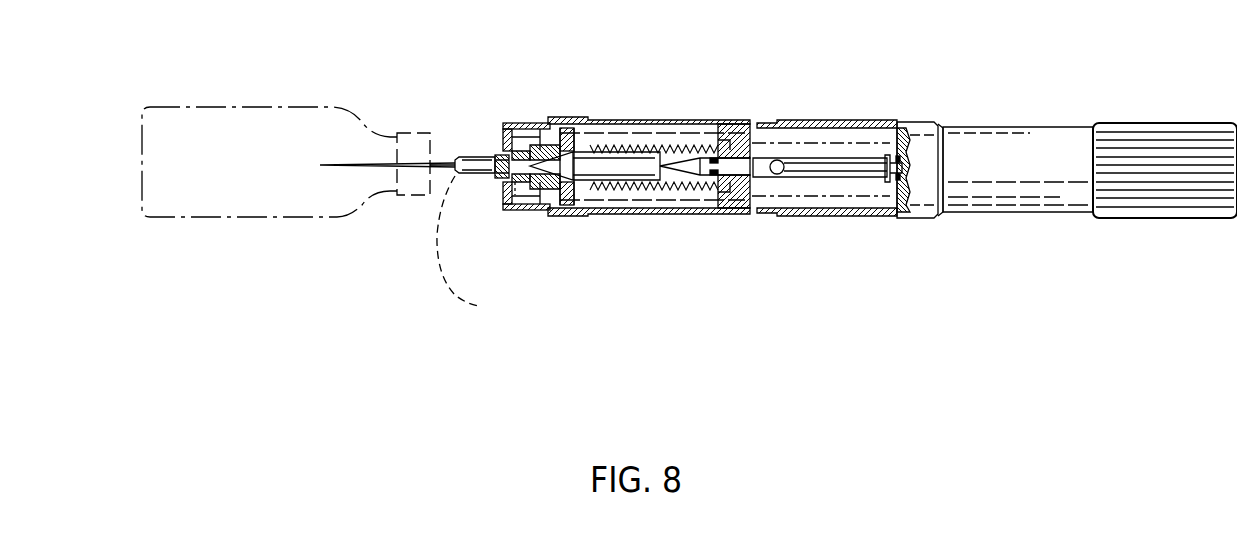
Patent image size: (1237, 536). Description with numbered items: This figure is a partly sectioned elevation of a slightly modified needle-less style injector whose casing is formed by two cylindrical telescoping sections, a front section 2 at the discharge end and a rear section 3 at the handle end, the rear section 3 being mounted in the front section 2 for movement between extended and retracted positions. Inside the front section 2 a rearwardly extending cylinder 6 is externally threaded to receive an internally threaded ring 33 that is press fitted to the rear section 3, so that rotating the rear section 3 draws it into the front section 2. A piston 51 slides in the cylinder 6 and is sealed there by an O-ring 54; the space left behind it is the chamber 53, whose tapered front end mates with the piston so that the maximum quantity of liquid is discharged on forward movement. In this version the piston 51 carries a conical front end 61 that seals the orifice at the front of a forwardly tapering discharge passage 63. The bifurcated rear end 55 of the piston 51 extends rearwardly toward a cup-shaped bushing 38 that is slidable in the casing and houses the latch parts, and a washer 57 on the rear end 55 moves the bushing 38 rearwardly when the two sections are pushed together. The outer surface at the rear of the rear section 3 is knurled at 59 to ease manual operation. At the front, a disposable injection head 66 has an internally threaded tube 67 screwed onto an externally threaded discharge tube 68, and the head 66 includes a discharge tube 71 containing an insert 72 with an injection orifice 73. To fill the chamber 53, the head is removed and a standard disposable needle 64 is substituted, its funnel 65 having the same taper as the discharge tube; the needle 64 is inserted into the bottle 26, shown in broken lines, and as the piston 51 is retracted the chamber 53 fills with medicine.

The front section 2 is at (918, 134).
The rear section 3 is at (1012, 164).
The cylinder 6 is at (618, 118).
The bottle 26 is at (330, 117).
The internally threaded ring 33 is at (735, 126).
The cup-shaped bushing 38 is at (903, 212).
The piston 51 is at (800, 122).
The chamber 53 is at (615, 167).
The O-ring 54 is at (712, 178).
The rear end of the piston 55 is at (815, 176).
The washer 57 is at (883, 155).
The knurled surface 59 is at (1135, 135).
The conical front end 61 is at (672, 158).
The discharge passage 63 is at (600, 150).
The needle 64 is at (460, 157).
The funnel 65 is at (486, 307).
The disposable injection head 66 is at (509, 150).
The internally threaded tube 67 is at (565, 212).
The externally threaded discharge tube 68 is at (535, 150).
The discharge tube 71 is at (509, 178).
The insert 72 is at (497, 176).
The injection orifice 73 is at (470, 158).